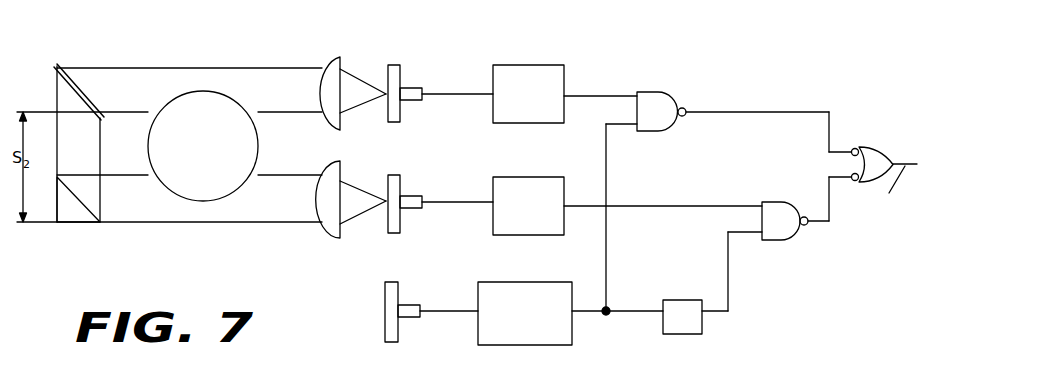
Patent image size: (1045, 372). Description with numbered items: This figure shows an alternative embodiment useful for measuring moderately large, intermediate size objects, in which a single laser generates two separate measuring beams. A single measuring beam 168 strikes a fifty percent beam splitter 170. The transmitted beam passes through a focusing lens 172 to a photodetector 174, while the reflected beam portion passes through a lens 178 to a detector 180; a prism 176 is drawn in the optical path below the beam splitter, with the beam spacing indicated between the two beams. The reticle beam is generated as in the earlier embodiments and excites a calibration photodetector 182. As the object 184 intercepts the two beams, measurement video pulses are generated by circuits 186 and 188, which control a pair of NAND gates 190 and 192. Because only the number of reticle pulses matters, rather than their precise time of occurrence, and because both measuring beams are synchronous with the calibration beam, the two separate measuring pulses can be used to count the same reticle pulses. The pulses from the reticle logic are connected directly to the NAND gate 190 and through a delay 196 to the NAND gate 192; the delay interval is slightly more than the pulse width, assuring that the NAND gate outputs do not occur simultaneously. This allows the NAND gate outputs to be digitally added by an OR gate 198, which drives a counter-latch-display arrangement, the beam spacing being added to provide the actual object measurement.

The measuring beam 168 is at (45, 87).
The beam splitter 170 is at (88, 98).
The focusing lens 172 is at (341, 58).
The photodetector 174 is at (402, 64).
The prism / mirror 176 is at (80, 226).
The lens 178 is at (341, 171).
The detector 180 is at (402, 177).
The calibration photodetector 182 is at (401, 282).
The object 184 is at (212, 129).
The measurement video circuit 186 is at (563, 66).
The measurement video circuit 188 is at (539, 177).
The NAND gate 190 is at (656, 92).
The NAND gate 192 is at (770, 204).
The delay 196 is at (672, 300).
The OR gate 198 is at (863, 148).